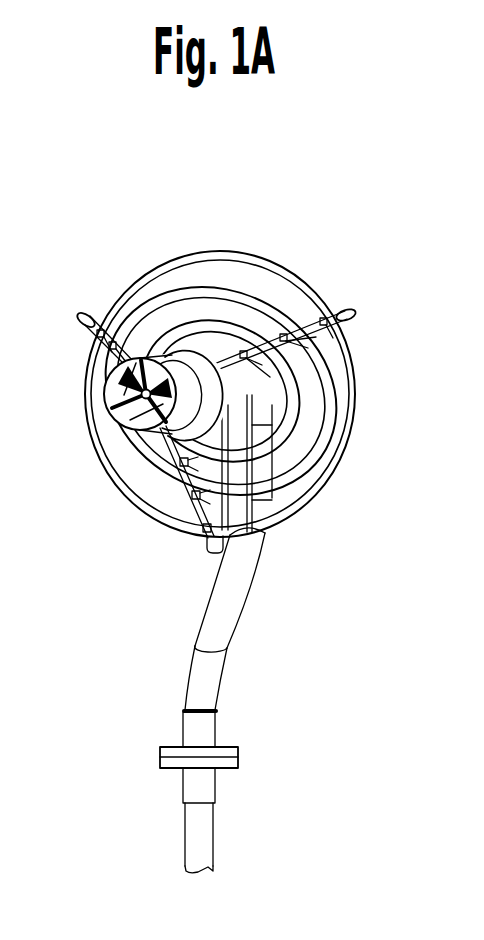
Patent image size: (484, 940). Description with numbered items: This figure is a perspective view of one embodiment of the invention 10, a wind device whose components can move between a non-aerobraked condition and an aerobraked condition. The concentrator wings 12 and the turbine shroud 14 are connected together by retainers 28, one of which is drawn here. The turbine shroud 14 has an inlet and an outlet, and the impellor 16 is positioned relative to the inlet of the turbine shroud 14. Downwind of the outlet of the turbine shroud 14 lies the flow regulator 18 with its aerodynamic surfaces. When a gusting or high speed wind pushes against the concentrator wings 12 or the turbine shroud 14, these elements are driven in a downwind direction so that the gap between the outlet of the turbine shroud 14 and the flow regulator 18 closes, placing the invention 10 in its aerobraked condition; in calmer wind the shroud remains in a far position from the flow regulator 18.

The invention 10 is at (113, 653).
The concentrator wings 12 is at (140, 283).
The turbine shroud 14 is at (150, 390).
The impellor 16 is at (142, 396).
The flow regulator 18 is at (222, 412).
The retainer 28 is at (206, 549).